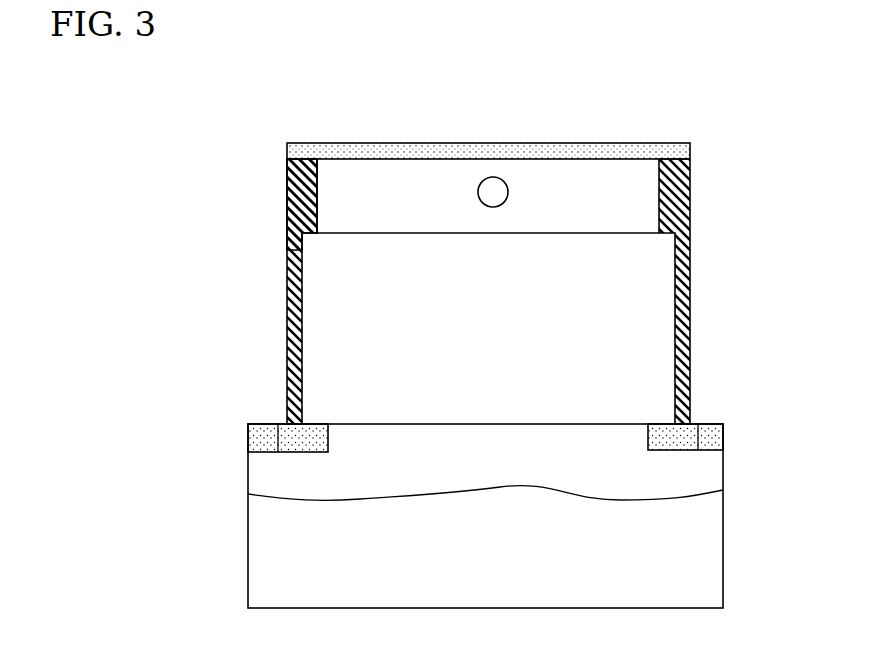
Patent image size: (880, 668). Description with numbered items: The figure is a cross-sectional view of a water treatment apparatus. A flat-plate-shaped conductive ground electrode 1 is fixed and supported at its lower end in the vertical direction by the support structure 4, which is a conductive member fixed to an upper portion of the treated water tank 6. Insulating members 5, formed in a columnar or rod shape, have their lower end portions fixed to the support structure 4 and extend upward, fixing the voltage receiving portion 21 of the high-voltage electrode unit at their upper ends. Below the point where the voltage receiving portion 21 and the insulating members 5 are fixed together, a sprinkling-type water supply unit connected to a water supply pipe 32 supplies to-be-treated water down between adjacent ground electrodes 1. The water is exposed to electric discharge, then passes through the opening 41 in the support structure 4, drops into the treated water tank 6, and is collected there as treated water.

The ground electrode 1 is at (676, 303).
The voltage receiving portion 21 is at (550, 150).
The water supply pipe 32 is at (478, 179).
The insulating member 5 is at (300, 173).
The support structure 4 is at (302, 433).
The opening 41 is at (427, 438).
The treated water tank 6 is at (248, 540).